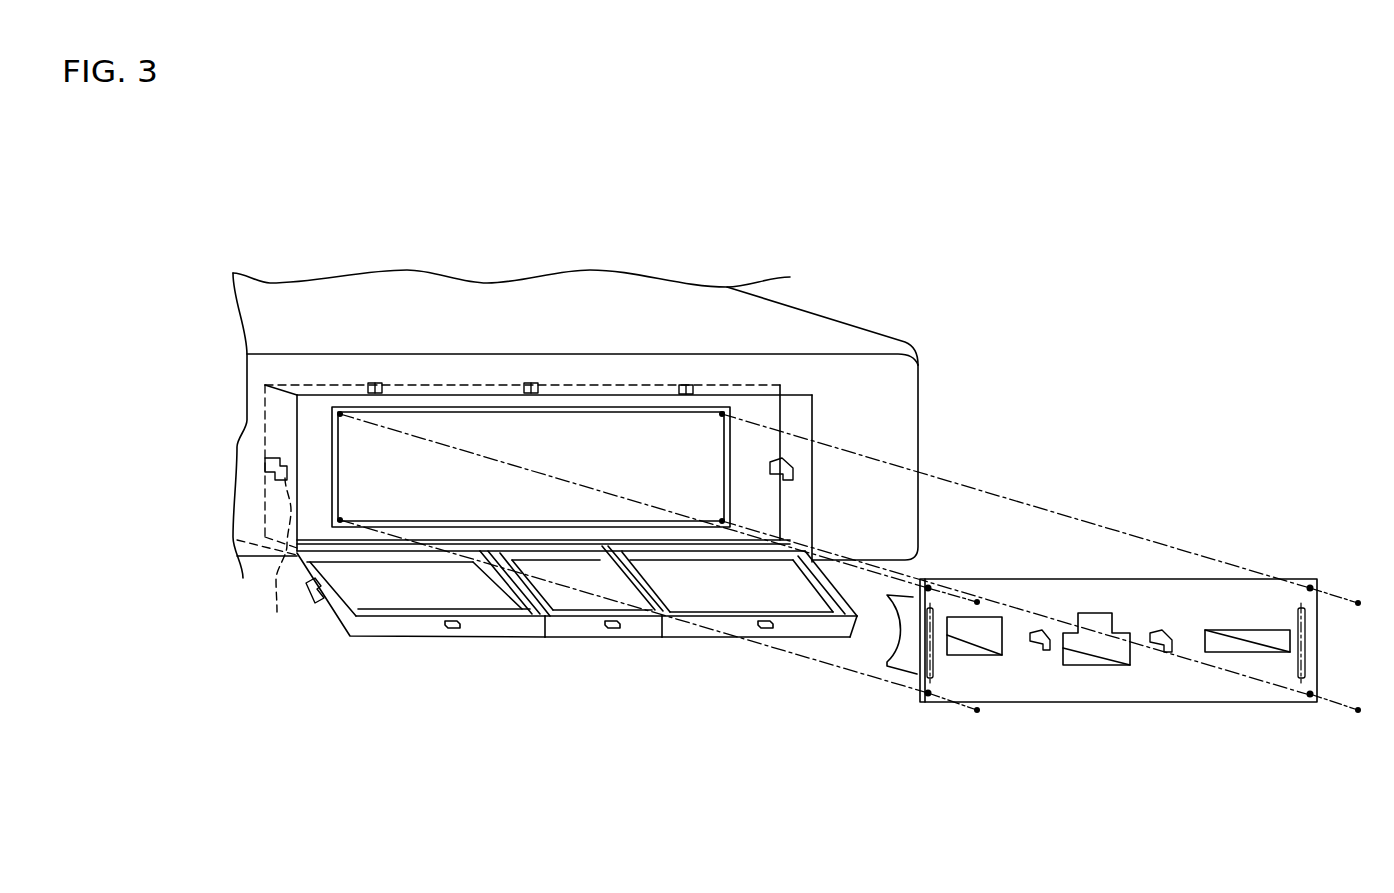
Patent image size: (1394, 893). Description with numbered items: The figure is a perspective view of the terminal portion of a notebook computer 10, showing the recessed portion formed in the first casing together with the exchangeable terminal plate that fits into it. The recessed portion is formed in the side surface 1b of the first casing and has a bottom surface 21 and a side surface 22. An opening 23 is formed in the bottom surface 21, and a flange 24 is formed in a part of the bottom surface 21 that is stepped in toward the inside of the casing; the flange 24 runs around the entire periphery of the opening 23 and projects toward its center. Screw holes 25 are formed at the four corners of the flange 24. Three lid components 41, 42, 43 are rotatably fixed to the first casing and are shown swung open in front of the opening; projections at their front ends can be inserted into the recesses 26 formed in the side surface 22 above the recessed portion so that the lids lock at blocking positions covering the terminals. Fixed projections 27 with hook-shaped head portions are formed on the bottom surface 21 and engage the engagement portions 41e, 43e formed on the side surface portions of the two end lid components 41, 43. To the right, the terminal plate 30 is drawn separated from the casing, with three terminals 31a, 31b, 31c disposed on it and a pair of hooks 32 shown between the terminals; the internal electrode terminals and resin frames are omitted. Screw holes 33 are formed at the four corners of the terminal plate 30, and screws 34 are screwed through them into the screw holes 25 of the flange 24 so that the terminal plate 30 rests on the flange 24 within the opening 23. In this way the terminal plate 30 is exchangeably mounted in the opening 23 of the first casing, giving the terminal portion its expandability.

The indoor unit 10 is at (798, 403).
The side surface 1b is at (897, 445).
The bottom surface 21 is at (812, 425).
The side surface 22 is at (793, 520).
The opening 23 is at (618, 447).
The flange 24 is at (490, 410).
The screw holes 25 is at (724, 413).
The recesses 26 is at (378, 383).
The fixed projections 27 is at (793, 483).
The terminal plate 30 is at (1018, 597).
The terminal 31a is at (975, 640).
The terminal 31b is at (1097, 642).
The terminal 31c is at (1247, 650).
The hooks 32 is at (1172, 660).
The screw holes 33 is at (1312, 582).
The screws 34 is at (1358, 600).
The lid component 41 is at (453, 638).
The engagement portion 41e is at (309, 590).
The lid component 42 is at (613, 638).
The lid component 43 is at (697, 630).
The engagement portion 43e is at (817, 570).